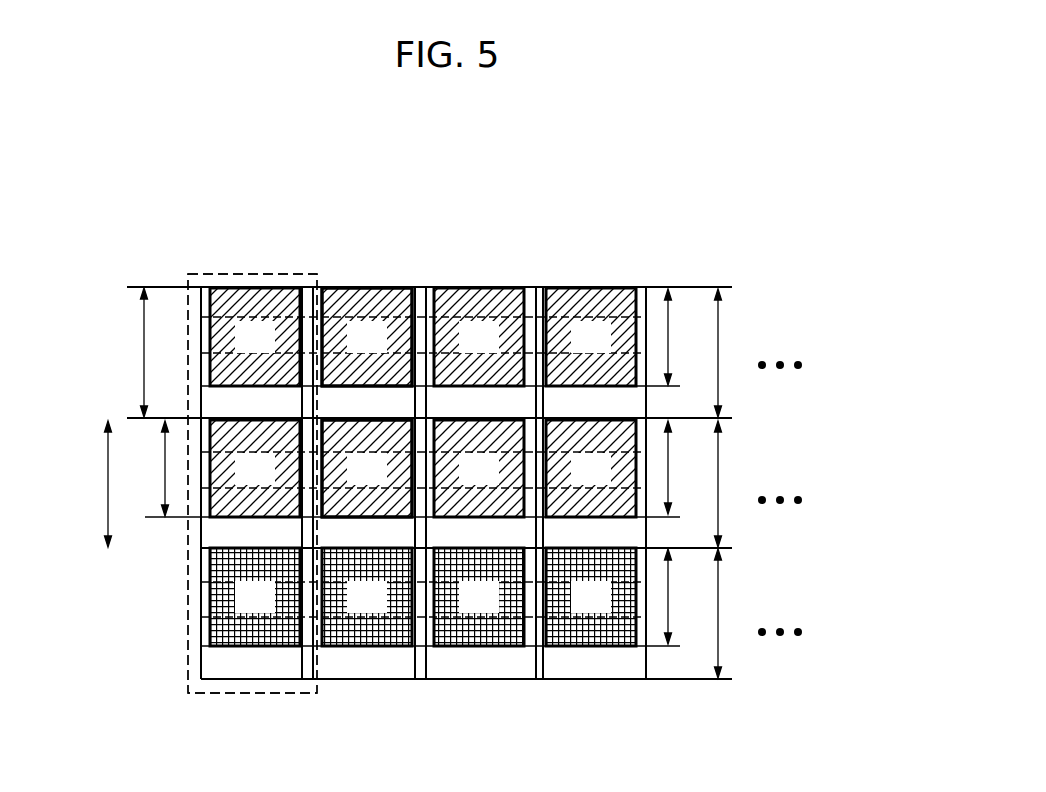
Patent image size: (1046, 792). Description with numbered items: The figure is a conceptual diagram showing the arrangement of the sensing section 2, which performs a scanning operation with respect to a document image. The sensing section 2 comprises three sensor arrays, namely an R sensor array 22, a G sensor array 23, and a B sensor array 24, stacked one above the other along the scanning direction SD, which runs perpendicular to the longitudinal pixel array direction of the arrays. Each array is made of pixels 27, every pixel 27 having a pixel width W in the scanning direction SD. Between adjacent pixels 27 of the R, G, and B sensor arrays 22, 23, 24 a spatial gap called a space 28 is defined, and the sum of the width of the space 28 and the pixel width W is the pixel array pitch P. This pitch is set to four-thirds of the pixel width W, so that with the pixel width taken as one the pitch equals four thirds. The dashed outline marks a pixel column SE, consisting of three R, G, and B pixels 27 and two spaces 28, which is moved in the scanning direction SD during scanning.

The sensing section 2 is at (553, 253).
The R sensor array 22 is at (816, 328).
The G sensor array 23 is at (818, 458).
The B sensor array 24 is at (818, 587).
The pixel 27 is at (362, 322).
The space 28 is at (356, 403).
The pixel column SE is at (257, 274).
The scanning direction SD is at (107, 485).